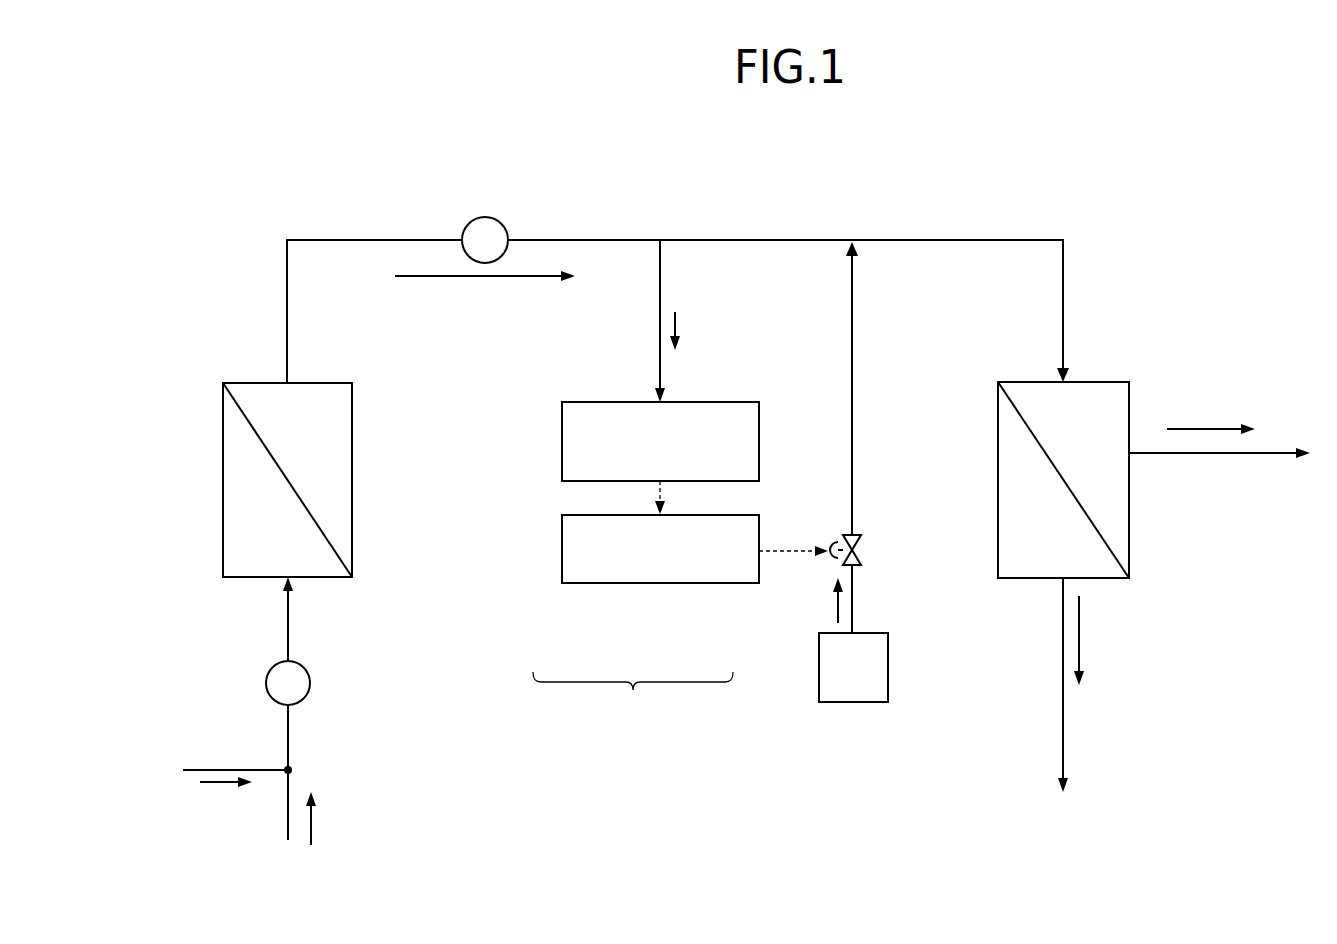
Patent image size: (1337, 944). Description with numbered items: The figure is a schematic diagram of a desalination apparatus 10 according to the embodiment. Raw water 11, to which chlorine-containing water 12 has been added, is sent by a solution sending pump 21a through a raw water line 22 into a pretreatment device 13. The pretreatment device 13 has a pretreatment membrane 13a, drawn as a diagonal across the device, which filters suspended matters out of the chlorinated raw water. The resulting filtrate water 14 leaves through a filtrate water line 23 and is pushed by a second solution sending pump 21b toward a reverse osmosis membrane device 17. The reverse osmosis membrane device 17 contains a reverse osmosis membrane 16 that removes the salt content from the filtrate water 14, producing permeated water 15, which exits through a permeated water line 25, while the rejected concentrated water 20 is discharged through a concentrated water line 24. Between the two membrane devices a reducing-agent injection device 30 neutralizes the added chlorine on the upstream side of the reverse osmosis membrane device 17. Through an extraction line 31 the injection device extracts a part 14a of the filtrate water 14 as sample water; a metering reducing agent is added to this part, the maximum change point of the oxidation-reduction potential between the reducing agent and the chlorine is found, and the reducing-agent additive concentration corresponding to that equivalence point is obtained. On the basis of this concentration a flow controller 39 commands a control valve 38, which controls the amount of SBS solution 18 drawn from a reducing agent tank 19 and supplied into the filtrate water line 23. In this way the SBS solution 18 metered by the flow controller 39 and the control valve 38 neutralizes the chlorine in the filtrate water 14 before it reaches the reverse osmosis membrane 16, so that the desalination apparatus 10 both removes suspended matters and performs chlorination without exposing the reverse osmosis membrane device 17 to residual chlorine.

The desalination apparatus 10 is at (1005, 158).
The raw water 11 is at (312, 824).
The chlorine-containing water 12 is at (222, 788).
The pretreatment device 13 is at (338, 498).
The pretreatment membrane 13a is at (250, 430).
The filtrate water 14 is at (486, 280).
The part of the filtrate water 14a is at (679, 325).
The permeated water 15 is at (1082, 660).
The reverse osmosis membrane 16 is at (1075, 500).
The reverse osmosis membrane device 17 is at (1180, 590).
The SBS solution 18 is at (835, 610).
The reducing agent tank 19 is at (856, 703).
The concentrated water 20 is at (1206, 427).
The solution sending pump 21a is at (266, 683).
The solution sending pump 21b is at (484, 217).
The raw water line 22 is at (291, 611).
The filtrate water line 23 is at (365, 243).
The concentrated water line 24 is at (1180, 456).
The permeated water line 25 is at (1066, 743).
The reducing-agent injection device 30 is at (633, 695).
The extraction line 31 is at (664, 272).
The control valve 38 is at (830, 560).
The flow controller 39 is at (641, 583).